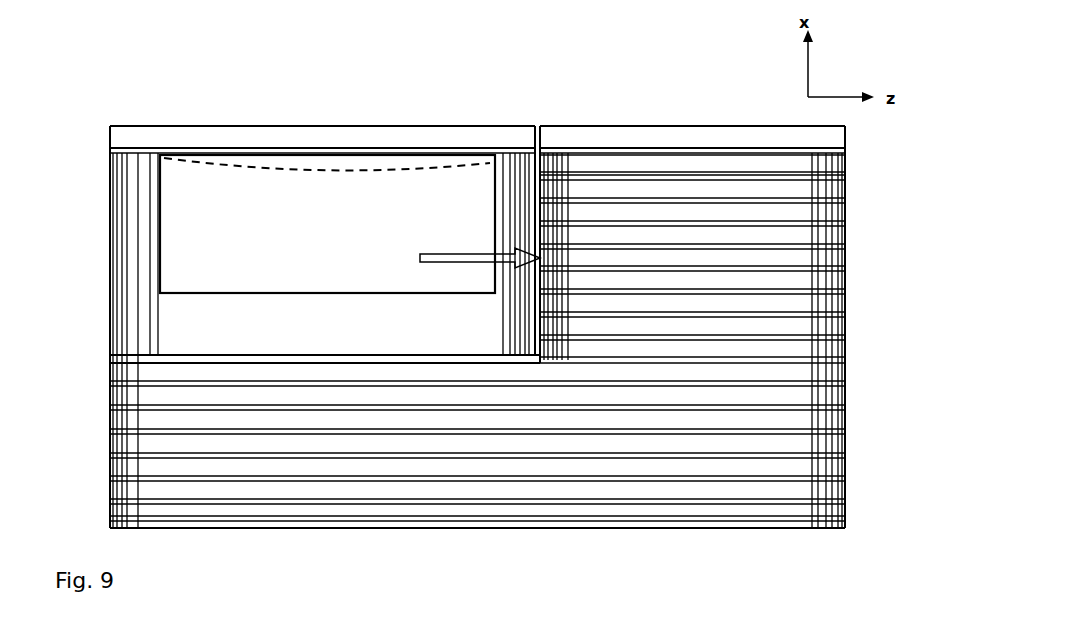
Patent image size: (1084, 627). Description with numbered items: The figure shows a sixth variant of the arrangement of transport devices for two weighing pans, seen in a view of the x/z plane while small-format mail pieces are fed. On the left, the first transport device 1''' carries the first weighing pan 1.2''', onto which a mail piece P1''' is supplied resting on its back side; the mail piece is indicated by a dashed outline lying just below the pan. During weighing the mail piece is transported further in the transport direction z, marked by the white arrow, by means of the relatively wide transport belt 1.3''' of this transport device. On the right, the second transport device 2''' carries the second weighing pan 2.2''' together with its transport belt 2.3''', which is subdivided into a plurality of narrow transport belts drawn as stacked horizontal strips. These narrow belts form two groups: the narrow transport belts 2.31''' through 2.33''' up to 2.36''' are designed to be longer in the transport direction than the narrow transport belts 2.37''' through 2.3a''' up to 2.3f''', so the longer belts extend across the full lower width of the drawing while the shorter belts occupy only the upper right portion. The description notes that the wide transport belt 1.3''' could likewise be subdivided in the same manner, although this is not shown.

The first component 1''' is at (318, 282).
The first weighing pan 1.2''' is at (322, 121).
The mail piece P1''' is at (327, 144).
The transport belt 1.3''' is at (476, 222).
The second component 2''' is at (477, 283).
The second weighing pan 2.2''' is at (692, 121).
The transport belt 2.3''' is at (692, 225).
The narrow transport belt 2.3f''' is at (732, 180).
The narrow transport belt 2.3a''' is at (736, 285).
The narrow transport belt 2.37''' is at (736, 346).
The narrow transport belt 2.36''' is at (521, 405).
The narrow transport belt 2.33''' is at (521, 467).
The narrow transport belt 2.31''' is at (521, 515).